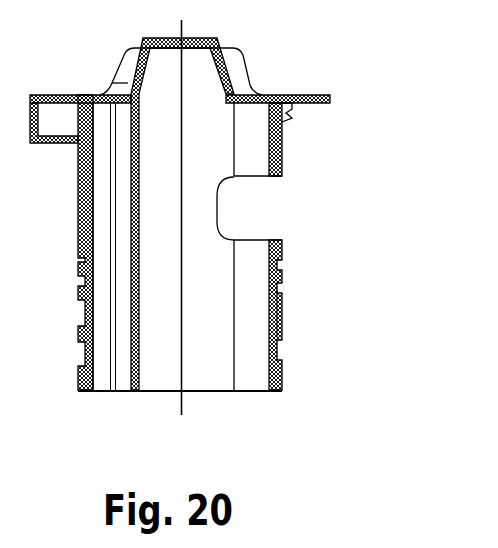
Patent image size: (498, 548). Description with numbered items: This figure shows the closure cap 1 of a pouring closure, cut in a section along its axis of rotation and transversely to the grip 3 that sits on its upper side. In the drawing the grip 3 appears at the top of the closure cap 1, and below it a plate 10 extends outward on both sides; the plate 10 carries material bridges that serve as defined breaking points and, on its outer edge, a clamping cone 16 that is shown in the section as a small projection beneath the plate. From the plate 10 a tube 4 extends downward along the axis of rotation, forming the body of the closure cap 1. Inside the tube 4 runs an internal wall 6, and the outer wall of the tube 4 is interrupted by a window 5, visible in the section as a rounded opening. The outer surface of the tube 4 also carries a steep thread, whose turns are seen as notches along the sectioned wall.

The closure cap 1 is at (70, 95).
The grip on the closure cap 3 is at (197, 37).
The plate 10 is at (304, 95).
The clamping cone on the plate 16 is at (283, 123).
The tube on the closure cap 4 is at (82, 228).
The window in the tube 5 is at (257, 205).
The internal wall in the tube 6 is at (137, 322).